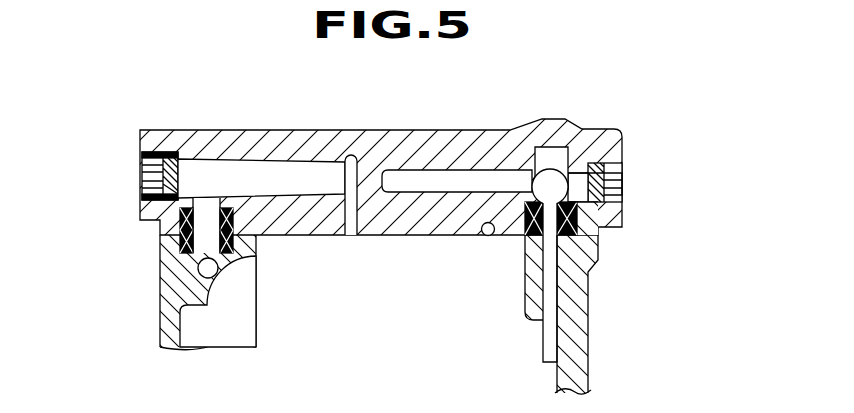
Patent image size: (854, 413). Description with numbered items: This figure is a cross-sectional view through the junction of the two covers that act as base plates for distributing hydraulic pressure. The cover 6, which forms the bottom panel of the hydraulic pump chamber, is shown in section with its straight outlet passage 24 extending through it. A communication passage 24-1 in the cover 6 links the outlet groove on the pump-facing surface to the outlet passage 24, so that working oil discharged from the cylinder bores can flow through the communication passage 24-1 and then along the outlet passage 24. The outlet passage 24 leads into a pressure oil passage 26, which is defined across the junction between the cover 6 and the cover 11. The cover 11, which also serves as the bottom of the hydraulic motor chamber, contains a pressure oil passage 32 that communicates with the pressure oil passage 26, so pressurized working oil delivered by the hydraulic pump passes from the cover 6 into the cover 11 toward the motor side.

The cover 6 is at (466, 130).
The outlet passage 24 is at (312, 177).
The communication passage 24-1 is at (351, 235).
The pressure oil passage 26 is at (180, 252).
The cover 11 is at (162, 325).
The pressure oil passage 32 is at (217, 271).